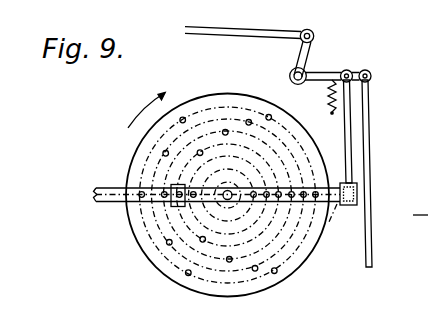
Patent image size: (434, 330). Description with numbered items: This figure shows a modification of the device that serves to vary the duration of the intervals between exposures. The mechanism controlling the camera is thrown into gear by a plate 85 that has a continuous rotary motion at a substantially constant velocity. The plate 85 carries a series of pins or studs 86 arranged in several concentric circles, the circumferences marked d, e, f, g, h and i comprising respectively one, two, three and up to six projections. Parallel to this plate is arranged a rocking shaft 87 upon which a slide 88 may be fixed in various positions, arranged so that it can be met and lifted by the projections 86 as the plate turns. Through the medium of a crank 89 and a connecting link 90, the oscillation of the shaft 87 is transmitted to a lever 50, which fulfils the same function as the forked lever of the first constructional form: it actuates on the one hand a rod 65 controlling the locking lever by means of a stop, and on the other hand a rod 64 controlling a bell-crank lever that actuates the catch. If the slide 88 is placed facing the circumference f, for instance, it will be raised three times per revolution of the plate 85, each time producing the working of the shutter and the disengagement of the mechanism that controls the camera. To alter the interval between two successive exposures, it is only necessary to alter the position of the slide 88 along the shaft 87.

The rod 64 is at (249, 30).
The forked lever 50 is at (327, 72).
The plate 85 is at (247, 86).
The pins or studs 86 is at (183, 117).
The rocking shaft 87 is at (113, 202).
The slide 88 is at (171, 186).
The crank 89 is at (345, 213).
The connecting link 90 is at (344, 132).
The rod 65 is at (368, 155).